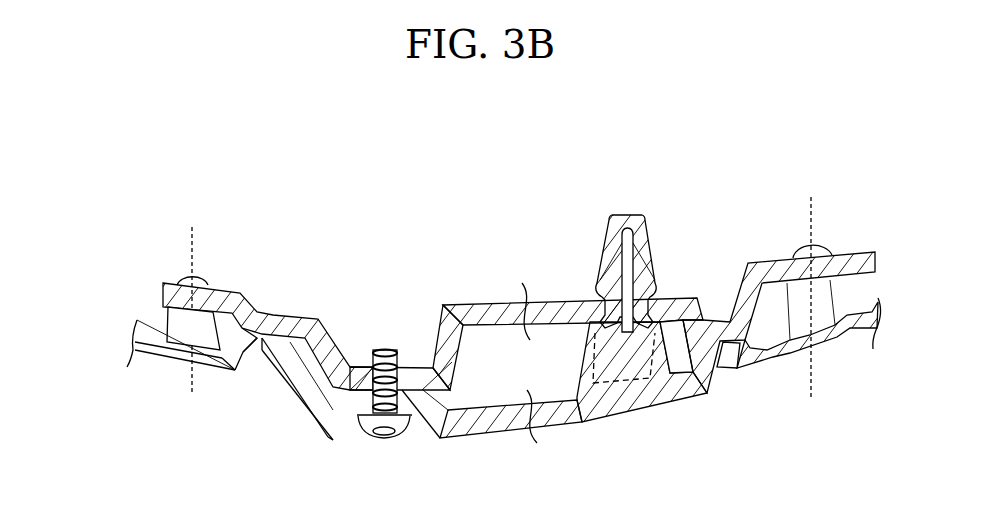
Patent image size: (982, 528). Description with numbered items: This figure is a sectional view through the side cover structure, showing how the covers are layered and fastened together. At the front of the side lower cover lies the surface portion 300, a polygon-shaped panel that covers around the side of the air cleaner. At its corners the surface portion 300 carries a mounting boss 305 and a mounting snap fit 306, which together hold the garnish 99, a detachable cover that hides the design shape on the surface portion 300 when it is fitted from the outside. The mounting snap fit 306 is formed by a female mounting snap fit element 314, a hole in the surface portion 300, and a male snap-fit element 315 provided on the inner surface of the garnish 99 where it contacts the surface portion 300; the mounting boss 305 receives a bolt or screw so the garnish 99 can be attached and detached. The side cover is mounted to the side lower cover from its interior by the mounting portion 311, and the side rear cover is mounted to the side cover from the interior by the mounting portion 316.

The surface portion 300 is at (504, 291).
The mounting boss 305 is at (388, 336).
The mounting snap fit 306 is at (650, 208).
The mounting portion 311 is at (202, 268).
The female mounting snap fit element 314 is at (594, 306).
The male snap-fit element 315 is at (630, 268).
The mounting portion 316 is at (786, 144).
The garnish 99 is at (675, 398).